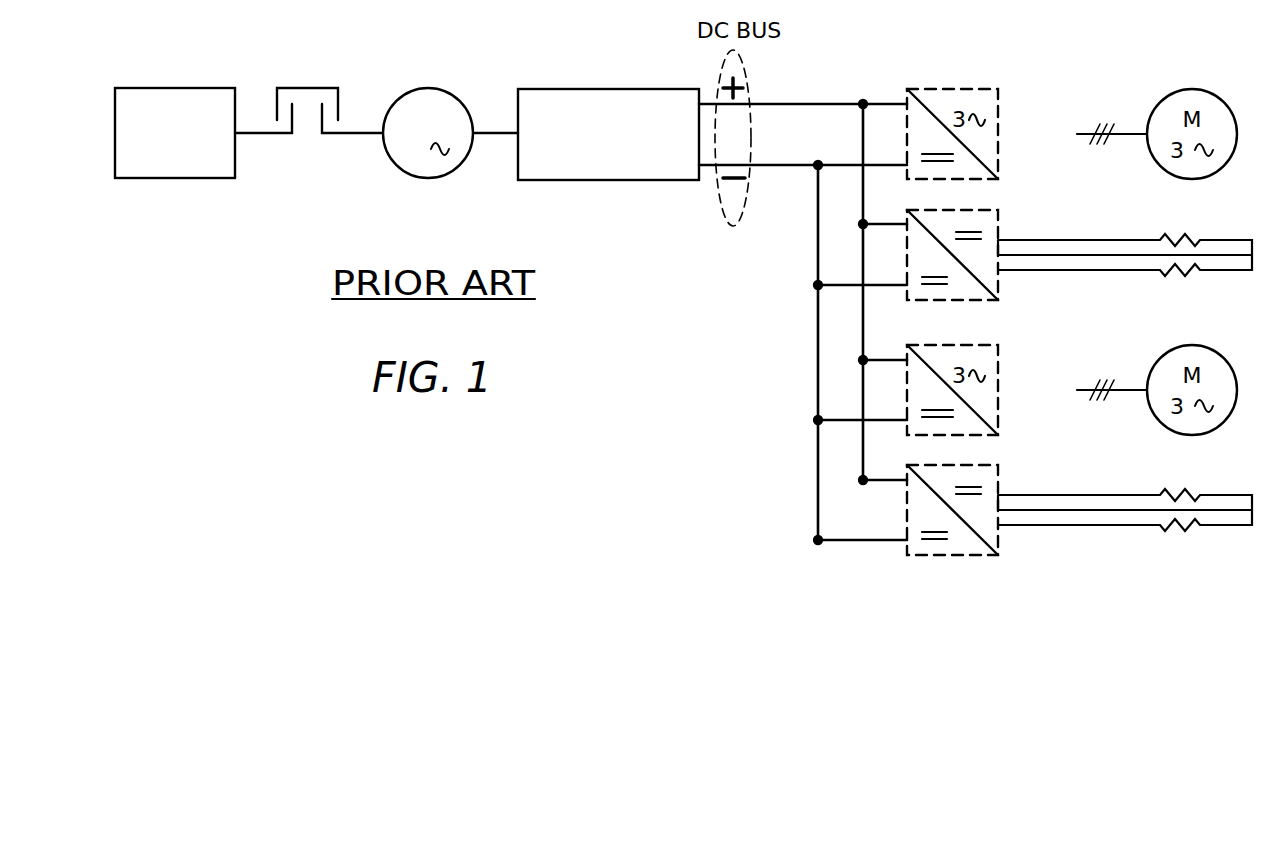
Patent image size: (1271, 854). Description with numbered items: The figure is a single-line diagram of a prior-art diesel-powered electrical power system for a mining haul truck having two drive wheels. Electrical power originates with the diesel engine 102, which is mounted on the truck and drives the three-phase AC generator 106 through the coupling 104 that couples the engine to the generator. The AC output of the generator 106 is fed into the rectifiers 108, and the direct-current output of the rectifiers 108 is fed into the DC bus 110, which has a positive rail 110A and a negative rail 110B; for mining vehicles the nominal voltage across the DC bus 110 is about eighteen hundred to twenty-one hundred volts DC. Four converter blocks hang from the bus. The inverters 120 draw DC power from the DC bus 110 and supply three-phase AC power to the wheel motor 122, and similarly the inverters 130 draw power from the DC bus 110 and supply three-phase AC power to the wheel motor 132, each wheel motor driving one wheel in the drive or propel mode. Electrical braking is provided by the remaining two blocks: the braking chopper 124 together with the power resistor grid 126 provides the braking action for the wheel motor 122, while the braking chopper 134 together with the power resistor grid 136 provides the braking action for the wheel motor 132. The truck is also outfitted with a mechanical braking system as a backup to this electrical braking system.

The diesel engine 102 is at (175, 146).
The coupling 104 is at (309, 97).
The 3-phase AC generator 106 is at (450, 146).
The rectifiers 108 is at (608, 148).
The DC bus 110 is at (729, 226).
The positive rail 110A is at (803, 102).
The negative rail 110B is at (795, 163).
The inverters 120 is at (975, 133).
The wheel motor 122 is at (1157, 122).
The braking chopper 124 is at (929, 253).
The power resistor grid 126 is at (1125, 242).
The inverters 130 is at (929, 389).
The wheel motor 132 is at (1157, 377).
The braking chopper 134 is at (929, 509).
The power resistor grid 136 is at (1125, 496).